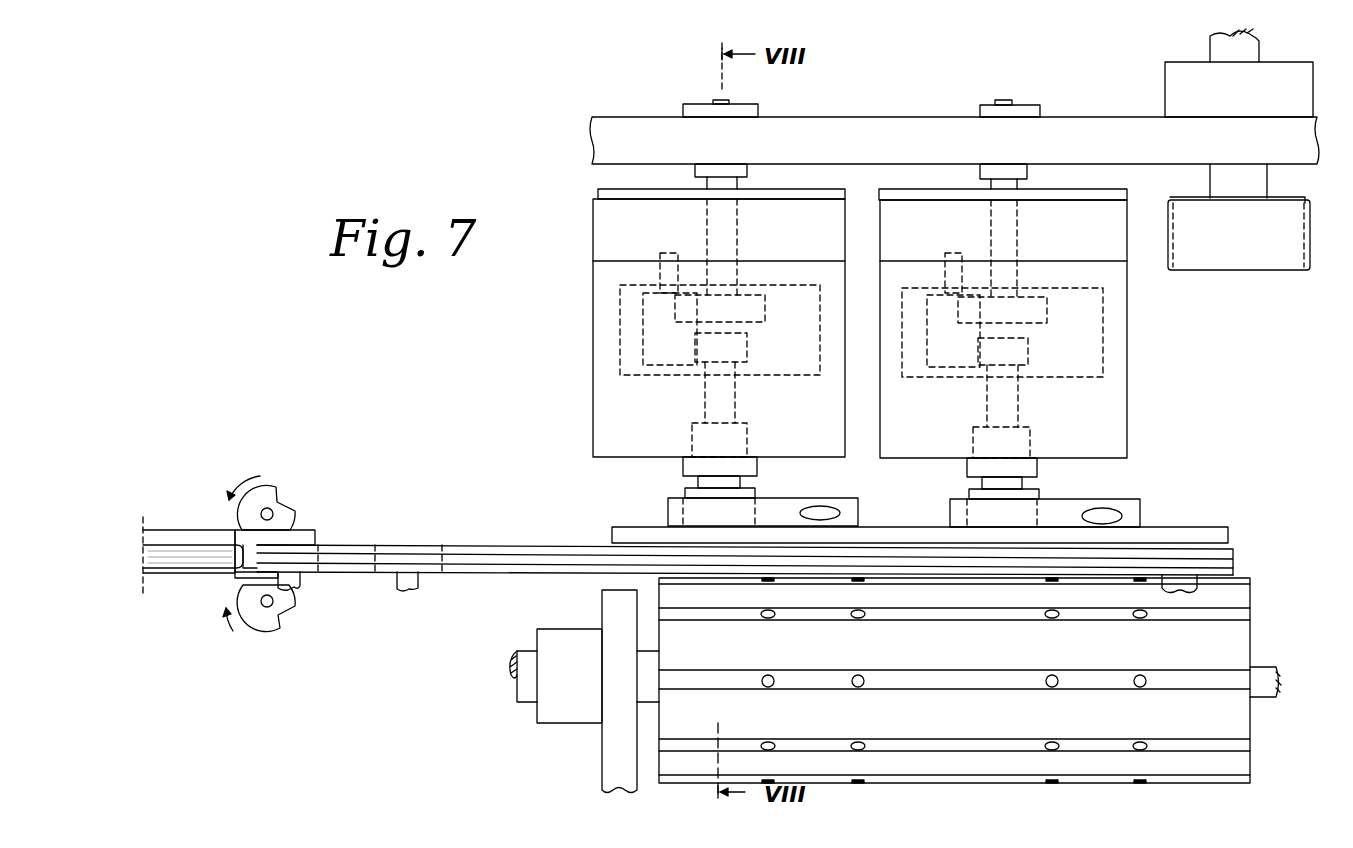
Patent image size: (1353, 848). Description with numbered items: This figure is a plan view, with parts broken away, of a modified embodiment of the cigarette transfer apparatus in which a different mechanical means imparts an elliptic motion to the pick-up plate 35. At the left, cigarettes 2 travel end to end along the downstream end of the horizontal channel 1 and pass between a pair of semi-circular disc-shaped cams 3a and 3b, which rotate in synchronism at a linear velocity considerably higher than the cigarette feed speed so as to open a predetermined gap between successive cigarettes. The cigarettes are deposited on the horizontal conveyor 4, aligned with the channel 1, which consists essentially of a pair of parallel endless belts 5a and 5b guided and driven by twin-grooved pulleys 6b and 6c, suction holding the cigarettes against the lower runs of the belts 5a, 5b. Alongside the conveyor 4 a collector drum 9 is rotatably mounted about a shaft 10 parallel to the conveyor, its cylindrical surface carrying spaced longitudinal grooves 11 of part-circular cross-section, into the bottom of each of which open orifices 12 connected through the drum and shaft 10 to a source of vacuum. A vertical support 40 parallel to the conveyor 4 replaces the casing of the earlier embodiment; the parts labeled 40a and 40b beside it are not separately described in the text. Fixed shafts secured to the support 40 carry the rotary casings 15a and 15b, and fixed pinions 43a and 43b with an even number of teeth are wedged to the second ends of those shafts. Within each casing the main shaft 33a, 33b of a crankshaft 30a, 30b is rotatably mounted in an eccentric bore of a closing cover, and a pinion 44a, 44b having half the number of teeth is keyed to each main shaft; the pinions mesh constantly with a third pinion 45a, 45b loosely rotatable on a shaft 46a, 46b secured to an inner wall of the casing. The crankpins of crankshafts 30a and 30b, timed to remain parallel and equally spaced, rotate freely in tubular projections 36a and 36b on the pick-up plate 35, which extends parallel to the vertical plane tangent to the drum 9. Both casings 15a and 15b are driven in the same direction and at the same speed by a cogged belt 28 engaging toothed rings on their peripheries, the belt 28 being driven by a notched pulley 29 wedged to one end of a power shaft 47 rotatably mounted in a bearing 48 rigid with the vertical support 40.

The horizontal channel 1 is at (198, 532).
The cigarettes 2 is at (199, 571).
The disc-shaped cam 3a is at (267, 500).
The disc-shaped cam 3b is at (270, 625).
The horizontal conveyor 4 is at (745, 563).
The endless belt 5a is at (347, 545).
The endless belt 5b is at (348, 568).
The twin-grooved pulley 6b is at (407, 562).
The twin-grooved pulley 6c is at (1200, 568).
The collector drum 9 is at (1257, 756).
The shaft 10 is at (517, 682).
The longitudinal grooves 11 is at (992, 608).
The orifices 12 is at (858, 677).
The rotary casing 15a is at (614, 411).
The rotary casing 15b is at (1113, 403).
The cogged belt 28 is at (1151, 252).
The notched pulley 29 is at (1257, 183).
The crankshaft 30a is at (742, 483).
The crankshaft 30b is at (1040, 485).
The main shaft 33a is at (736, 410).
The main shaft 33b is at (1018, 415).
The pick-up plate 35 is at (1232, 538).
The tubular projection 36a is at (688, 492).
The tubular projection 36b is at (972, 493).
The vertical support 40 is at (866, 140).
The base plate 40a is at (668, 522).
The base plate 40b is at (950, 523).
The fixed pinion 43a is at (766, 307).
The fixed pinion 43b is at (1047, 306).
The pinion 44a is at (750, 347).
The valve element 44b is at (1031, 352).
The third fixed pinion 45a is at (645, 312).
The valve element 45b is at (928, 345).
The shaft 46a is at (659, 264).
The port 46b is at (930, 273).
The power shaft 47 is at (1250, 53).
The bearing 48 is at (1239, 89).